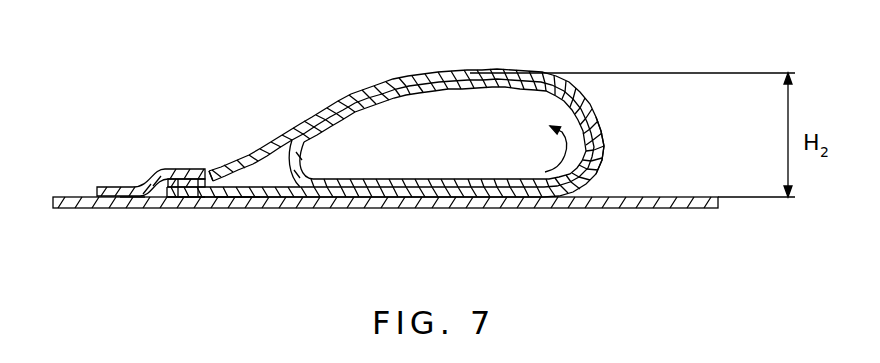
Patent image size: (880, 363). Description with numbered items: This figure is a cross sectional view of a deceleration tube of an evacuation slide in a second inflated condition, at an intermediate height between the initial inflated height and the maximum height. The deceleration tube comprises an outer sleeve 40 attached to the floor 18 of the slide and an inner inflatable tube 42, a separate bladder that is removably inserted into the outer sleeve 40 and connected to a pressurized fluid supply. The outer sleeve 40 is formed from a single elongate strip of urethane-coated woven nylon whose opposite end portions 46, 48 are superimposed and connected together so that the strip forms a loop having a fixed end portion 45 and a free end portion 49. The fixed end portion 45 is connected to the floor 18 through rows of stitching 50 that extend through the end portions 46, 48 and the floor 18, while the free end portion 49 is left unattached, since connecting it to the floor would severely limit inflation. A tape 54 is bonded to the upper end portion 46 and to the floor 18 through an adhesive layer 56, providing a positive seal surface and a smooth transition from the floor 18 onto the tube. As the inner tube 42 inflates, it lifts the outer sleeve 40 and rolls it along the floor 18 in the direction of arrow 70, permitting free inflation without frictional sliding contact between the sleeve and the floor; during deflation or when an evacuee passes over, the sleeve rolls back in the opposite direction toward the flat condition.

The floor 18 is at (650, 196).
The outer sleeve 40 is at (310, 118).
The inner inflatable tube 42 is at (350, 100).
The fixed end portion 45 is at (133, 207).
The end portion 46 is at (213, 180).
The end portion 48 is at (233, 207).
The free end portion 49 is at (608, 137).
The rows of stitching 50 is at (178, 208).
The tape 54 is at (160, 170).
The adhesive layer 56 is at (200, 180).
The arrow 70 is at (553, 171).